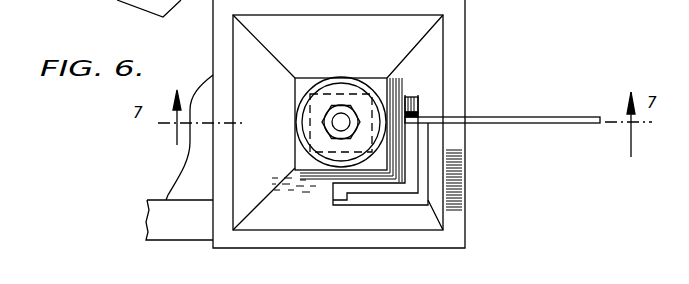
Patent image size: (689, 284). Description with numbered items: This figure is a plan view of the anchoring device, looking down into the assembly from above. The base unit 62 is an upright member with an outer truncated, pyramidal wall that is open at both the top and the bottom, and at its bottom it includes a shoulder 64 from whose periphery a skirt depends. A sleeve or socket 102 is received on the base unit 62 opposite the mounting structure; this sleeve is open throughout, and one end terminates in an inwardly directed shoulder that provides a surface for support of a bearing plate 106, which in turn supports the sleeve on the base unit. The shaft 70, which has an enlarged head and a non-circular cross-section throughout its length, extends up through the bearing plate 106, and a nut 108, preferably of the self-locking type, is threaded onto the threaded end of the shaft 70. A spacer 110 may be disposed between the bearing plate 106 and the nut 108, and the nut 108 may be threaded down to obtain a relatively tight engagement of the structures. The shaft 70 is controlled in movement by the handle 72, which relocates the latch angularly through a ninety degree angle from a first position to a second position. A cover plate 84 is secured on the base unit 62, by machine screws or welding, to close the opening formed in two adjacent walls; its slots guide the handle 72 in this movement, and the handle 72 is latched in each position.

The base unit 62 is at (255, 158).
The shoulder 64 is at (452, 50).
The shaft 70 is at (341, 122).
The handle 72 is at (573, 126).
The cover plate 84 is at (420, 106).
The sleeve or socket 102 is at (358, 125).
The bearing plate 106 is at (302, 147).
The nut 108 is at (326, 118).
The spacer 110 is at (394, 92).